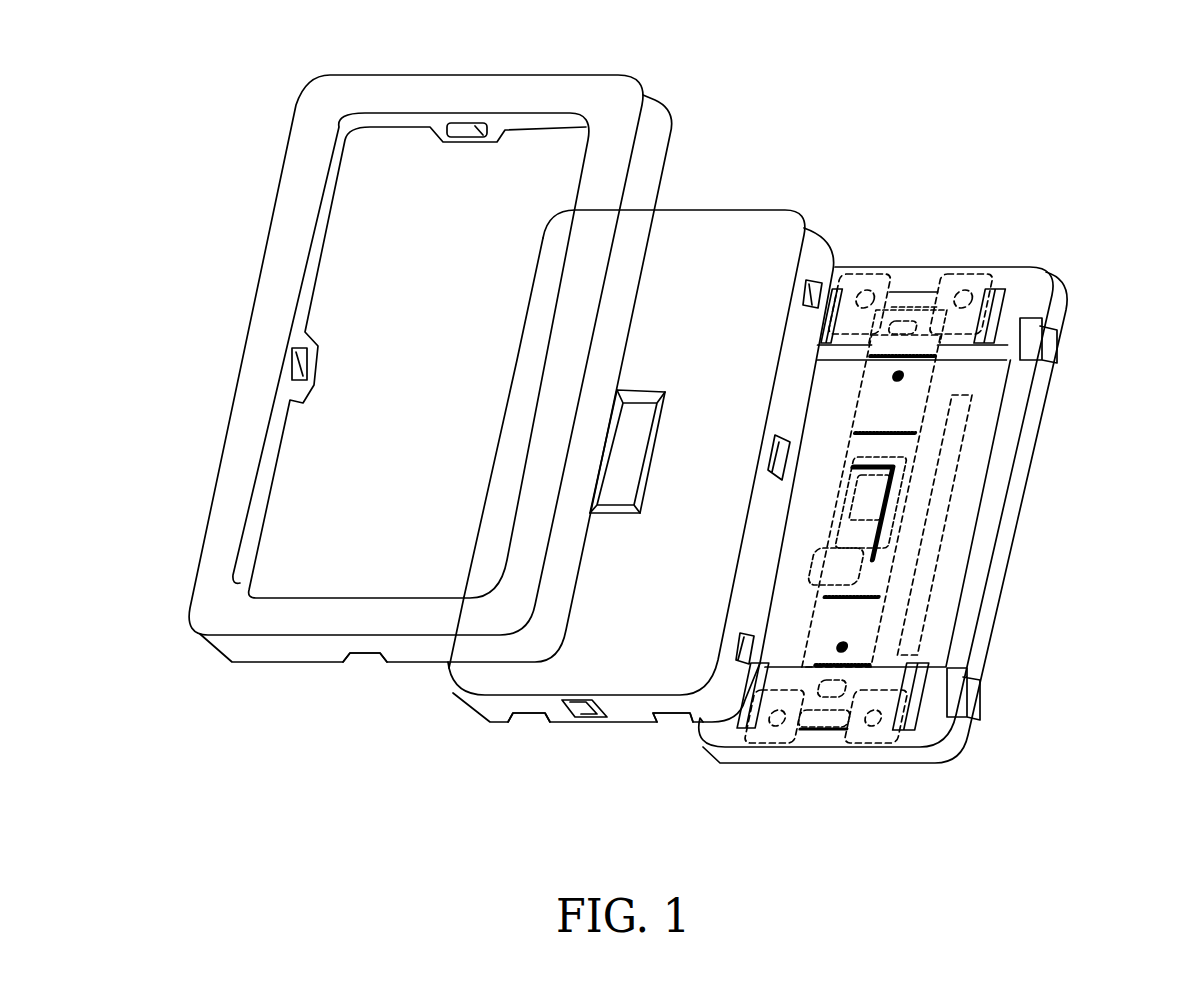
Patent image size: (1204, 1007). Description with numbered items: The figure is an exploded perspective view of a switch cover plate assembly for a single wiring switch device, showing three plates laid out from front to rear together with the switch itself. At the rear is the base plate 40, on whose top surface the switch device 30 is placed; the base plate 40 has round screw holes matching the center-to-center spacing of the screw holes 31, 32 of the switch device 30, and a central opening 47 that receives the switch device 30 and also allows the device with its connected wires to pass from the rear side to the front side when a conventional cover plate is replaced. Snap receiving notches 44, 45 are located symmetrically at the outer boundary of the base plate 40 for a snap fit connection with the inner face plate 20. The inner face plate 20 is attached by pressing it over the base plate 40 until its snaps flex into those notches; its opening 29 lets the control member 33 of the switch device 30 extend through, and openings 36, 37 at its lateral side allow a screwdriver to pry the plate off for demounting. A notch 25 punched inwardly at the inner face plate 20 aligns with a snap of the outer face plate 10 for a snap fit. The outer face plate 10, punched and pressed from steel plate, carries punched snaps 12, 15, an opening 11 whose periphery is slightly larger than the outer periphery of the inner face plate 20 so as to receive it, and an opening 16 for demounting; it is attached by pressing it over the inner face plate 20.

The outer face plate 10 is at (618, 130).
The opening 11 is at (429, 441).
The snap 12 is at (463, 127).
The snap 15 is at (300, 362).
The opening 16 is at (364, 668).
The inner face plate 20 is at (737, 263).
The notch 25 is at (587, 703).
The opening 29 is at (637, 458).
The switch device 30 is at (925, 375).
The screw hole 31 is at (913, 325).
The screw hole 32 is at (827, 697).
The control member 33 is at (823, 565).
The opening 36 is at (540, 713).
The opening 37 is at (680, 717).
The base plate 40 is at (1007, 465).
The snap receiving notch 44 is at (1057, 347).
The snap receiving notch 45 is at (983, 697).
The central opening 47 is at (832, 460).